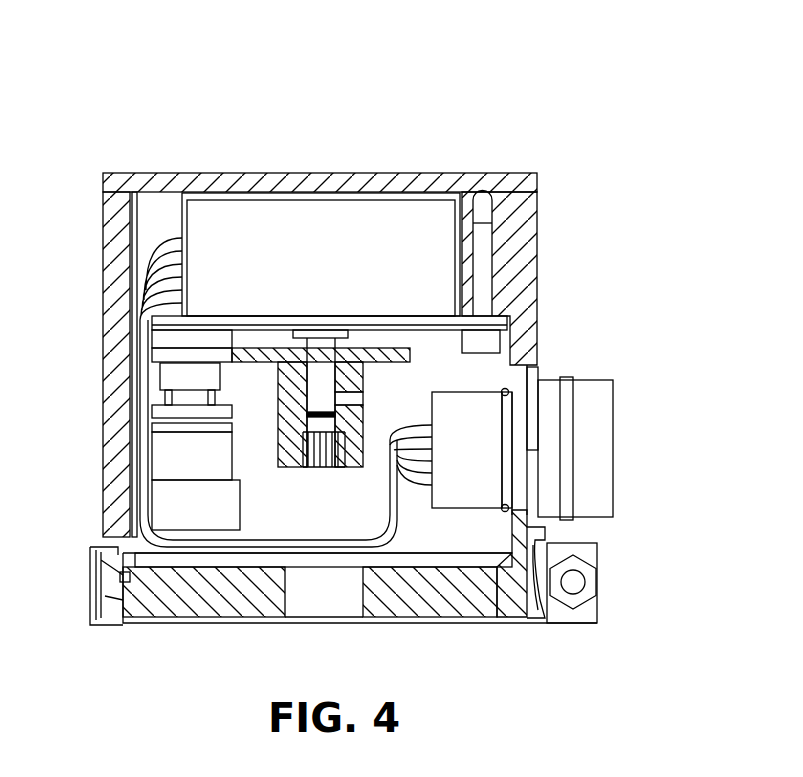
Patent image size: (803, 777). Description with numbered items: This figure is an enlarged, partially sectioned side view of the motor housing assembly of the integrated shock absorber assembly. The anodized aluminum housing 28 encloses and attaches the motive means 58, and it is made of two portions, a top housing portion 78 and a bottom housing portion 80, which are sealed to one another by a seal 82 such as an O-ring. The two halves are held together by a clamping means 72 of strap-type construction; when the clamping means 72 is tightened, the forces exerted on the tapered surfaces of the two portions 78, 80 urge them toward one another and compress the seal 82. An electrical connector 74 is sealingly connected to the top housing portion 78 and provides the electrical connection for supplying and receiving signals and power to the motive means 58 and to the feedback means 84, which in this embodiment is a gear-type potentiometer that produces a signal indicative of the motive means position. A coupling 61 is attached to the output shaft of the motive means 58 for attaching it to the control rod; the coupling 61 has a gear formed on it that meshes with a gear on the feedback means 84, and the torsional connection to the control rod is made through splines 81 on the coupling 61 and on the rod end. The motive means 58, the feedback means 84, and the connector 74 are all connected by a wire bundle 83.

The housing 28 is at (402, 165).
The motive means 58 is at (355, 235).
The coupling 61 is at (403, 364).
The clamping means 72 is at (585, 553).
The electrical connector 74 is at (595, 468).
The top housing portion 78 is at (128, 173).
The bottom housing portion 80 is at (205, 600).
The splines 81 is at (328, 455).
The seal 82 is at (517, 570).
The wire bundle 83 is at (288, 540).
The feedback means 84 is at (160, 460).